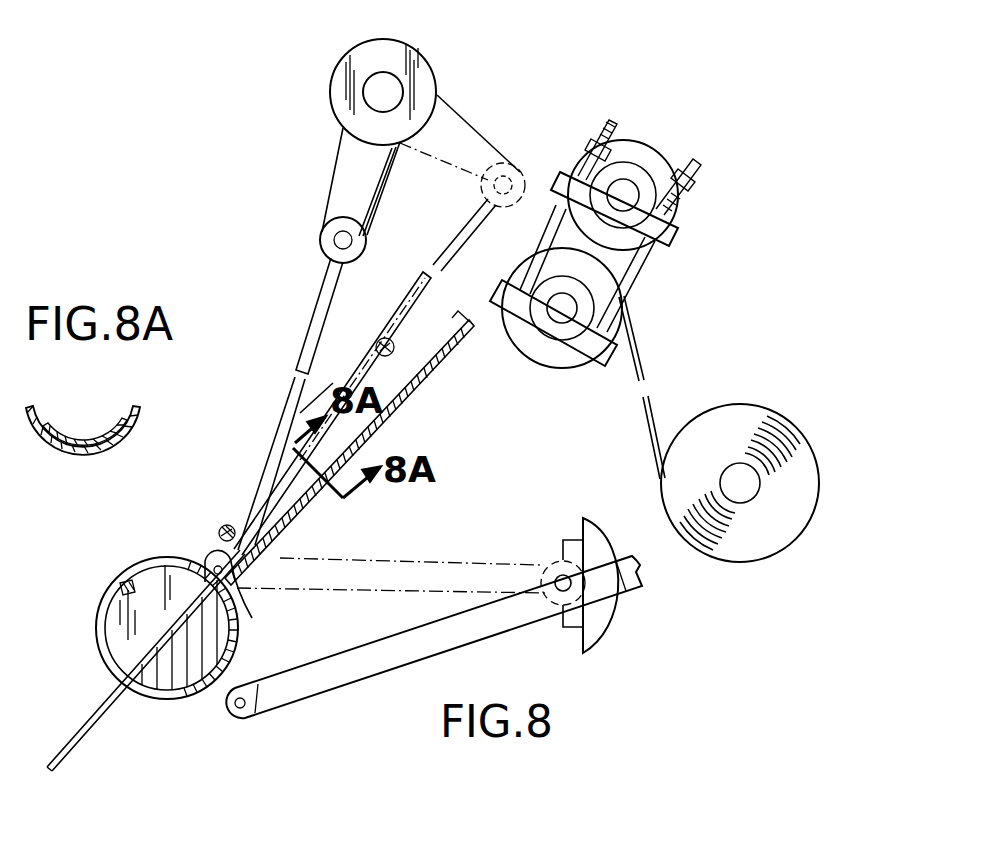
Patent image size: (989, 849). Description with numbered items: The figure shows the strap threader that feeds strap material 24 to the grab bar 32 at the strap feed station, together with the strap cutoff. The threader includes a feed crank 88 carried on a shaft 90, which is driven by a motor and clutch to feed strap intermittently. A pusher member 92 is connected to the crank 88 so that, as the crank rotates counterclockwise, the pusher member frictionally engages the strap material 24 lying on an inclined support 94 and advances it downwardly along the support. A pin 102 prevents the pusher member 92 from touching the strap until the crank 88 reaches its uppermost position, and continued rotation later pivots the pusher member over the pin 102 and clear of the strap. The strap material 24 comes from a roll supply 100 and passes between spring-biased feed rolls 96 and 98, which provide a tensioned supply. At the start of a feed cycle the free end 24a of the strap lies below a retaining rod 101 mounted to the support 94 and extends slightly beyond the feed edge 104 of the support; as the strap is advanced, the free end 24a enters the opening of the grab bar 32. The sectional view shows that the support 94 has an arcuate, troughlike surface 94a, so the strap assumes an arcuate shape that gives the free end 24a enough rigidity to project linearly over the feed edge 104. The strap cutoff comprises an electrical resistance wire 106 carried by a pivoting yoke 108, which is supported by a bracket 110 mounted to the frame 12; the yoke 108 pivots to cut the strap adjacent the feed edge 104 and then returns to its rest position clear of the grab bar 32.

In FIG. 8, the frame 12 is at (603, 610).
In FIG. 8, the strap material 24 is at (633, 320).
In FIG. 8A, the strap material 24 is at (50, 425).
In FIG. 8, the free end 24a is at (63, 750).
In FIG. 8, the grab bar 32 is at (93, 626).
In FIG. 8, the feed crank 88 is at (350, 160).
In FIG. 8, the shaft 90 is at (388, 83).
In FIG. 8, the pusher member 92 is at (323, 292).
In FIG. 8, the inclined support 94 is at (413, 387).
In FIG. 8A, the inclined support 94 is at (138, 414).
In FIG. 8A, the arcuate troughlike surface 94a is at (127, 423).
In FIG. 8, the feed roll 96 is at (642, 152).
In FIG. 8, the feed roll 98 is at (542, 343).
In FIG. 8, the roll supply 100 is at (657, 489).
In FIG. 8, the retaining rod 101 is at (225, 525).
In FIG. 8, the pin 102 is at (430, 303).
In FIG. 8, the feed edge 104 is at (238, 597).
In FIG. 8, the electrical resistance wire 106 is at (237, 715).
In FIG. 8, the pivoting yoke 108 is at (436, 632).
In FIG. 8, the bracket 110 is at (573, 613).